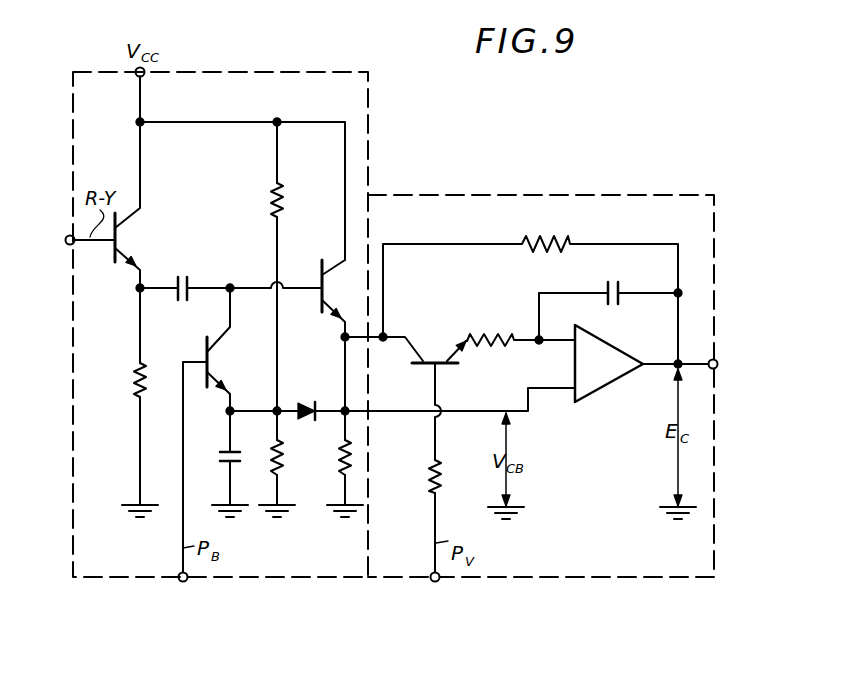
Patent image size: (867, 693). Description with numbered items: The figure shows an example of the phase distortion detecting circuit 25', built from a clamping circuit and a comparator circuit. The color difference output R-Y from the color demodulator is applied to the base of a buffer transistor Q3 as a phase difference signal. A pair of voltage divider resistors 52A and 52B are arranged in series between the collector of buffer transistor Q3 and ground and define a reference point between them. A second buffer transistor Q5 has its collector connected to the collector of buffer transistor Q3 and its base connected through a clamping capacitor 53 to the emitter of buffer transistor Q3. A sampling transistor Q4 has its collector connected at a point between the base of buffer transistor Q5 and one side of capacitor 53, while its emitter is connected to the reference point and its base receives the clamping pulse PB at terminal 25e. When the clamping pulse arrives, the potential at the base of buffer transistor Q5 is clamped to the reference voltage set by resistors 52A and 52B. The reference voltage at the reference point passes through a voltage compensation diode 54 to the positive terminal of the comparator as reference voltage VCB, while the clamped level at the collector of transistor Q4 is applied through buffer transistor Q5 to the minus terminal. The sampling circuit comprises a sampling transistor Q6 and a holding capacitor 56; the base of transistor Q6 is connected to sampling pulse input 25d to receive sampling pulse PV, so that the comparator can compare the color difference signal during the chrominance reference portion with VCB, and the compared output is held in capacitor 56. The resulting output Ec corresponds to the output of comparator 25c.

The voltage divider resistor 52A is at (284, 203).
The voltage divider resistor 52B is at (284, 458).
The clamping capacitor 53 is at (181, 300).
The voltage compensation diode 54 is at (304, 402).
The holding capacitor 56 is at (608, 298).
The comparator 25c is at (596, 396).
The sampling pulse input 25d is at (435, 583).
The terminal PB 25e is at (183, 582).
The phase distortion detecting circuit 25' is at (220, 362).
The buffer transistor Q3 is at (127, 226).
The sampling transistor (clamping transistor) Q4 is at (215, 352).
The buffer transistor Q5 is at (320, 300).
The sampling transistor Q6 is at (421, 353).